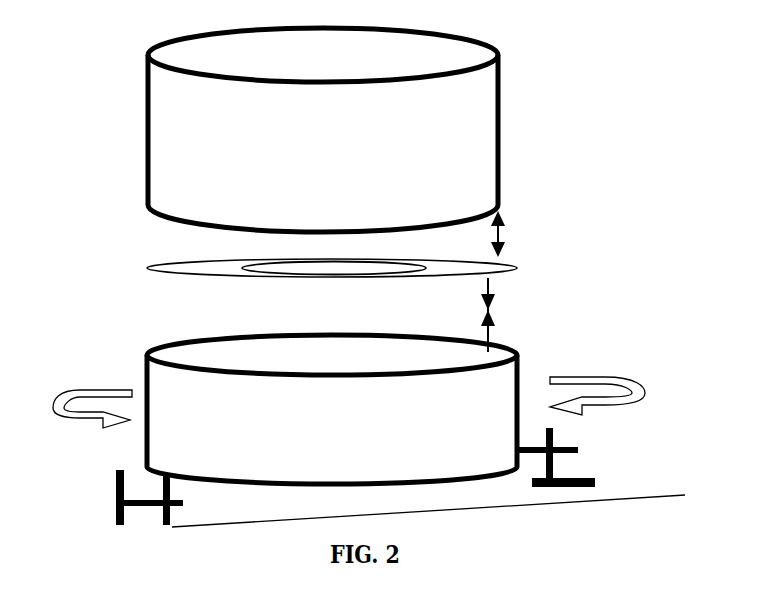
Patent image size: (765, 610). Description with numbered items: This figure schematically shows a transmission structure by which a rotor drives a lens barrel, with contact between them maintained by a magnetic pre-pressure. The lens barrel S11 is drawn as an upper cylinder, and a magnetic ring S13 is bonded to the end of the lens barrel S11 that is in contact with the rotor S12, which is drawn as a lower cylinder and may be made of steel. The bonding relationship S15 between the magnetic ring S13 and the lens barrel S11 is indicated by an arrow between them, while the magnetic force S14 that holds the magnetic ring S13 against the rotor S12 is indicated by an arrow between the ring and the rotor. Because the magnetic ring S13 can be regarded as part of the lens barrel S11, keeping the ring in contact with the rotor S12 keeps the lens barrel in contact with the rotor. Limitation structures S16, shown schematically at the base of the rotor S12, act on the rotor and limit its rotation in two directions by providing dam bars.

The lens barrel S11 is at (482, 177).
The rotor S12 is at (163, 387).
The magnetic ring S13 is at (180, 268).
The magnetic force S14 is at (495, 315).
The bonding relationship S15 is at (507, 235).
The limitation structures S16 is at (580, 450).